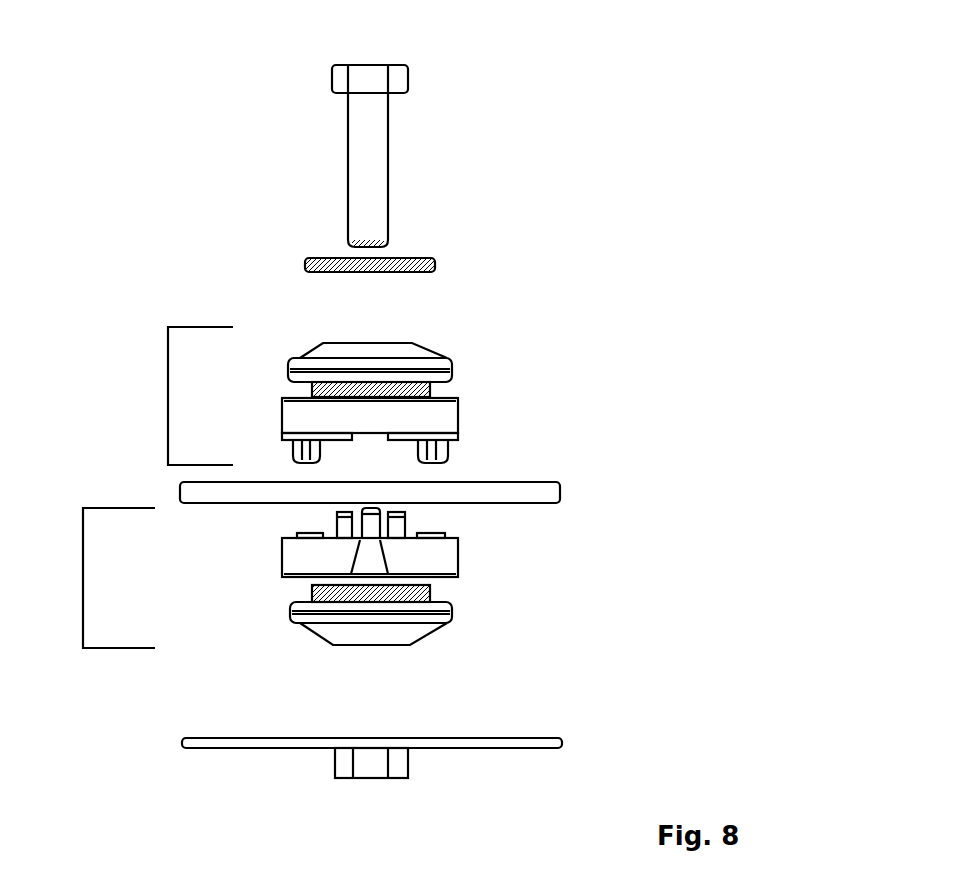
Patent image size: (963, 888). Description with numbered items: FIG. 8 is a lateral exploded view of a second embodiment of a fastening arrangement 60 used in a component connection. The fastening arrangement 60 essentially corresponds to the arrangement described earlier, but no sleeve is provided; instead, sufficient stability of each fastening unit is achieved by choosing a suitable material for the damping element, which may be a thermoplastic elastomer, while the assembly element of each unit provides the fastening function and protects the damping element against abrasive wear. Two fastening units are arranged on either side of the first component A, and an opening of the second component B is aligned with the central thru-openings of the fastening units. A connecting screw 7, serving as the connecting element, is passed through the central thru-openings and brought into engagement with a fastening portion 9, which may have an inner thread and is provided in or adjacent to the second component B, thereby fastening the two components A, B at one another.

The fastening arrangement 60 is at (634, 39).
The connecting screw 7 is at (375, 152).
The first component A is at (555, 492).
The second component B is at (560, 738).
The fastening portion 9 is at (400, 767).